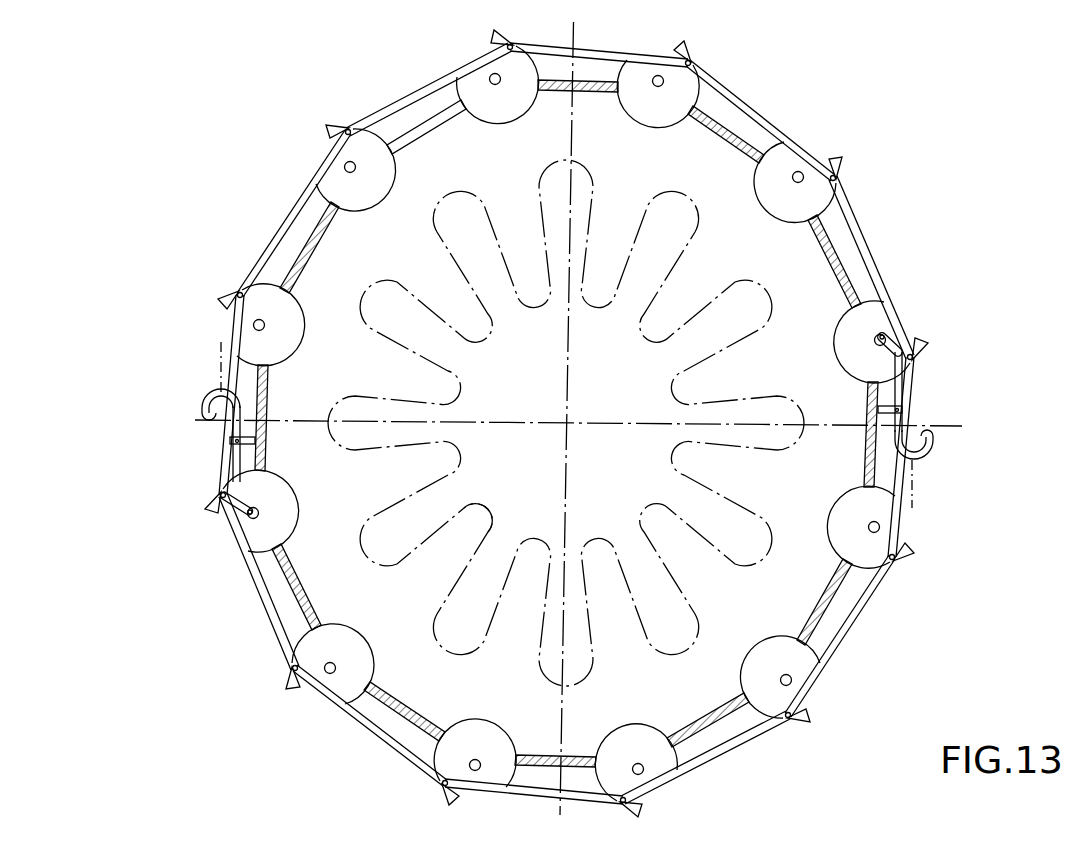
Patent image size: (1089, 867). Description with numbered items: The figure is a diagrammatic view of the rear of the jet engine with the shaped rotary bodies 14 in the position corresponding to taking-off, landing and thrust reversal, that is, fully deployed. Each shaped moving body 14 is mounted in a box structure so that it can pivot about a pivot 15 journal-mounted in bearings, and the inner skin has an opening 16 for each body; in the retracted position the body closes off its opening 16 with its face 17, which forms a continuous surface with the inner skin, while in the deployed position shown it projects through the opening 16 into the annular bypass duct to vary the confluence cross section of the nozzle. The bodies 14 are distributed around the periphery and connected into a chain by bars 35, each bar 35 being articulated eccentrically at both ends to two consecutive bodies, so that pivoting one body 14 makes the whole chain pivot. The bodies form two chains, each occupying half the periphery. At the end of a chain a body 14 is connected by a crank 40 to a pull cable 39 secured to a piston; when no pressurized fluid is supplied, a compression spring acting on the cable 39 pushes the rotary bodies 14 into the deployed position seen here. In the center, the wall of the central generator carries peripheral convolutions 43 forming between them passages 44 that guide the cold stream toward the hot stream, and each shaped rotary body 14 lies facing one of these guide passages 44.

The shaped moving body 14 is at (826, 191).
The pivot 15 is at (496, 86).
The opening 16 is at (397, 152).
The face 17 is at (914, 341).
The bar 35 is at (773, 128).
The pull cable 39 is at (913, 487).
The crank 40 is at (857, 344).
The peripheral convolution 43 is at (673, 463).
The passage 44 is at (455, 558).